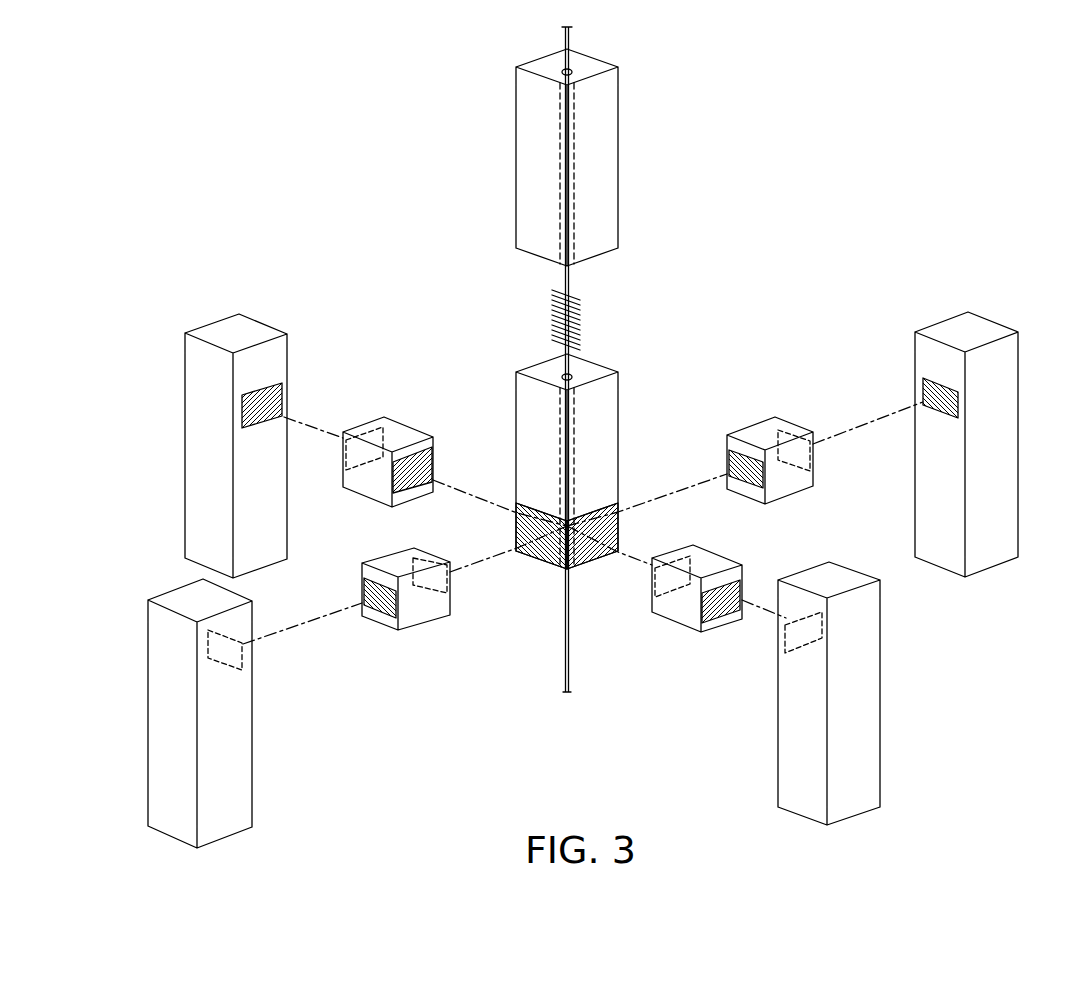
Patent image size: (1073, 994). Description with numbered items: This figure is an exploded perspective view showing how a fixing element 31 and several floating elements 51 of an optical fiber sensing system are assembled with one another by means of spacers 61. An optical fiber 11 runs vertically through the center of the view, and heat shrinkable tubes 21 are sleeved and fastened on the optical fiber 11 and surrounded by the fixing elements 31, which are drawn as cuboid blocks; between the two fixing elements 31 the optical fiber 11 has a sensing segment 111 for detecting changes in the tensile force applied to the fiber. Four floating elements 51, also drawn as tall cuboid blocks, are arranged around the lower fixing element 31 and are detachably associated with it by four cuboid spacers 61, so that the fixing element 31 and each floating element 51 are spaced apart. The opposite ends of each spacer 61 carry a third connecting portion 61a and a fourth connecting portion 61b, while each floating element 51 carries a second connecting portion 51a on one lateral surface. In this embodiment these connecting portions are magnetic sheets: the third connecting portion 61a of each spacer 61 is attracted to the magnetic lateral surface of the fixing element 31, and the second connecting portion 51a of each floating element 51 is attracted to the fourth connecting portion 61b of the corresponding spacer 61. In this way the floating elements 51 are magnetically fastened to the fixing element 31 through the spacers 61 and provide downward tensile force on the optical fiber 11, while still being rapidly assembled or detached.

The optical fiber 11 is at (563, 690).
The sensing segment 111 is at (580, 318).
The heat shrinkable tube 21 is at (572, 182).
The fixing element 31 is at (612, 113).
The floating element 51 is at (190, 513).
The second connecting portion 51a is at (275, 412).
The spacer 61 is at (370, 490).
The third connecting portion 61a is at (432, 472).
The fourth connecting portion 61b is at (375, 438).